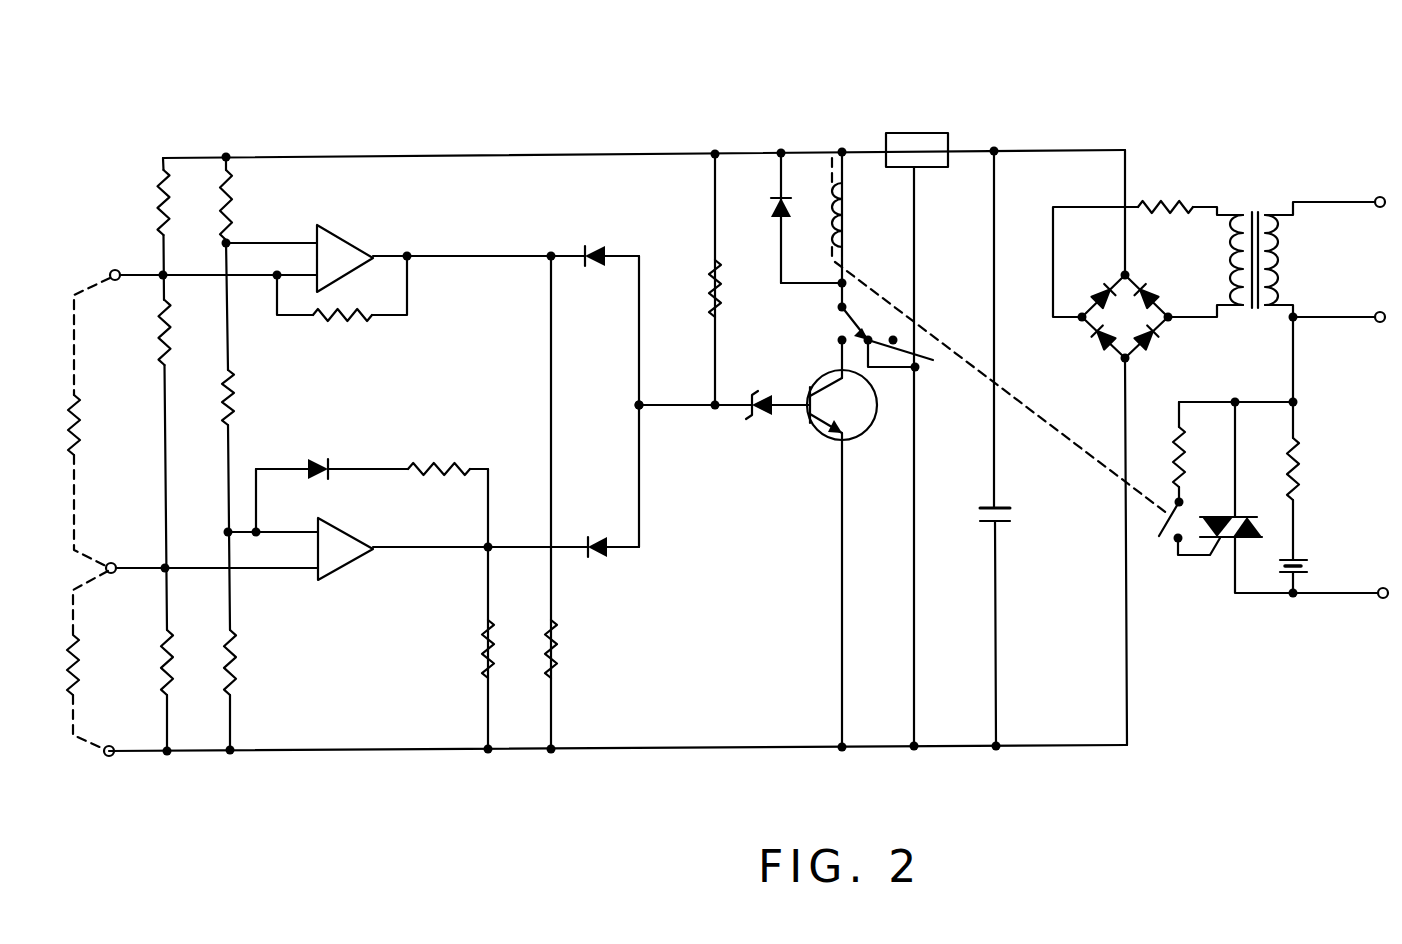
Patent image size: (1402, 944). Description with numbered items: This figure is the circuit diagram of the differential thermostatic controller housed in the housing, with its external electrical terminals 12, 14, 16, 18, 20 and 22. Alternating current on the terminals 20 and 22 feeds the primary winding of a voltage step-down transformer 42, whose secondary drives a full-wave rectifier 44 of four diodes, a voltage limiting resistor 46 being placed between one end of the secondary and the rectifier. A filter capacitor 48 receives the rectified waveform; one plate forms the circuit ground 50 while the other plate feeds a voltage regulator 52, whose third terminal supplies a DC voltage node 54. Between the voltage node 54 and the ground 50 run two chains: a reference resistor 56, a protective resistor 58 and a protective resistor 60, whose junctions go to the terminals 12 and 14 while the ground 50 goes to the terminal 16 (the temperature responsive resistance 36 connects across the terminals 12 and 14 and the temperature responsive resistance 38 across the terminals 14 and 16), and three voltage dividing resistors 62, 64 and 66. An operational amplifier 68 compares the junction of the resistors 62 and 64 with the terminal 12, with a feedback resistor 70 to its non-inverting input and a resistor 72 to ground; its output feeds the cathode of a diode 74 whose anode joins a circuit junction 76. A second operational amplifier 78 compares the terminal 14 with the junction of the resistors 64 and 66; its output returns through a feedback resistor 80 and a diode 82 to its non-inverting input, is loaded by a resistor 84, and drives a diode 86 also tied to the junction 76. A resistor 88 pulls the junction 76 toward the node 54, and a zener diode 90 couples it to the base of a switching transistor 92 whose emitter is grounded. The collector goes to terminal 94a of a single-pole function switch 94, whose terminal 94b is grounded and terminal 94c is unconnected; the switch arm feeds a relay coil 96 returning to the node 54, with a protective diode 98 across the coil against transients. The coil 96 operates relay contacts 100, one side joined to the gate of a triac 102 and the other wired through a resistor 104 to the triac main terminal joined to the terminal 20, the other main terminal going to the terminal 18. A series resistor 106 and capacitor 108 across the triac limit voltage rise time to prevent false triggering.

The electrical terminal 12 is at (117, 268).
The electrical terminal 14 is at (114, 563).
The electrical terminal 16 is at (112, 746).
The electrical terminal 18 is at (1378, 598).
The electrical terminal 20 is at (1383, 284).
The electrical terminal 22 is at (1383, 196).
The temperature responsive resistance 36 is at (82, 408).
The temperature responsive resistance 38 is at (78, 643).
The voltage step-down transformer 42 is at (1253, 210).
The full-wave rectifier 44 is at (1148, 276).
The voltage limiting resistor 46 is at (1148, 200).
The filter capacitor 48 is at (1012, 511).
The circuit ground 50 is at (1000, 745).
The voltage regulator 52 is at (920, 140).
The DC voltage node 54 is at (718, 153).
The reference resistor 56 is at (160, 213).
The protective resistor 58 is at (172, 318).
The protective resistor 60 is at (163, 640).
The voltage dividing resistor 62 is at (233, 199).
The voltage dividing resistor 64 is at (236, 388).
The voltage dividing resistor 66 is at (240, 650).
The operational amplifier 68 is at (342, 255).
The feedback resistor 70 is at (350, 320).
The resistor 72 is at (560, 645).
The diode 74 is at (600, 256).
The circuit junction 76 is at (641, 403).
The operational amplifier 78 is at (340, 565).
The feedback resistor 80 is at (470, 465).
The diode 82 is at (312, 462).
The resistor 84 is at (483, 645).
The diode 86 is at (600, 550).
The resistor 88 is at (709, 290).
The zener diode 90 is at (768, 392).
The switching transistor 92 is at (853, 427).
The single-pole function switch 94 is at (826, 327).
The switch terminal 94a is at (838, 340).
The switch terminal 94b is at (940, 374).
The switch terminal 94c is at (893, 340).
The relay coil 96 is at (846, 198).
The protective diode 98 is at (772, 210).
The relay contacts 100 is at (1170, 510).
The triac 102 is at (1258, 520).
The resistor 104 is at (1183, 478).
The resistor 106 is at (1300, 460).
The capacitor 108 is at (1308, 562).